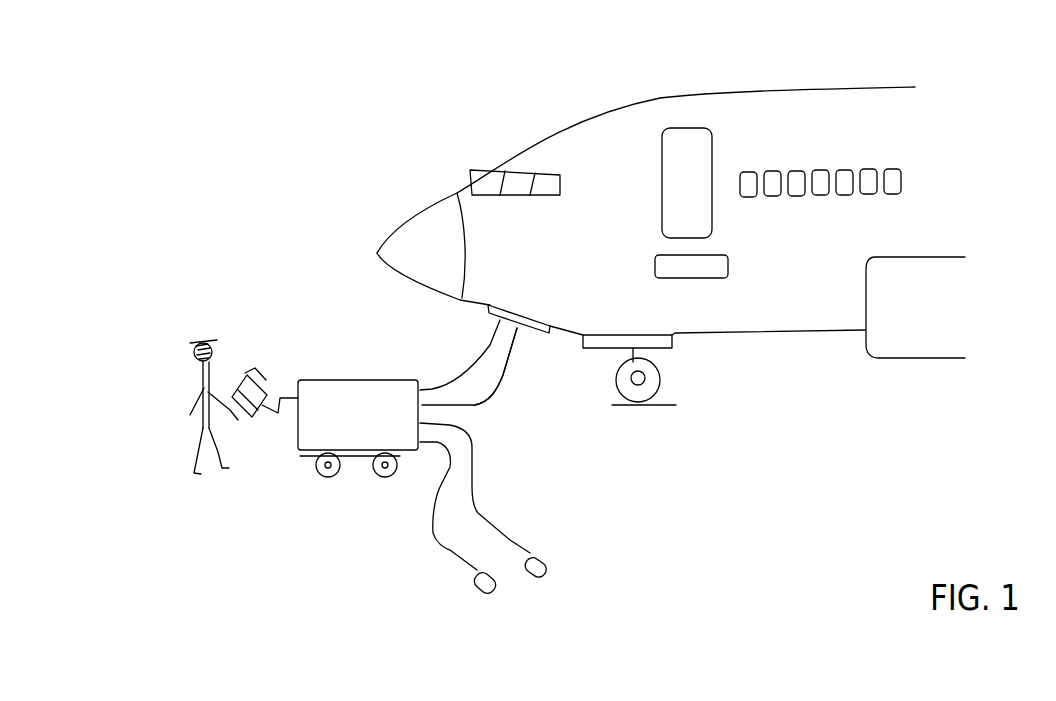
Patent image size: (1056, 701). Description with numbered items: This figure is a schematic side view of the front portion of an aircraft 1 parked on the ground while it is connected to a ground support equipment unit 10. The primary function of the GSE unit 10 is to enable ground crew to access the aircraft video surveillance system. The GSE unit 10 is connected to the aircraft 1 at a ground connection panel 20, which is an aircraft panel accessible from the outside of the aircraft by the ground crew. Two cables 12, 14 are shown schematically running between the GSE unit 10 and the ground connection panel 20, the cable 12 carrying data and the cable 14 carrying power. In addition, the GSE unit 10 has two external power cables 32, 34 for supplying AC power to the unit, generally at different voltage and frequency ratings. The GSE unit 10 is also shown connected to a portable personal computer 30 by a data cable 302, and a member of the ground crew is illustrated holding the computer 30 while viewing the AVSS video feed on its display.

The aircraft 1 is at (577, 112).
The ground support equipment (GSE) unit 10 is at (362, 377).
The cable 12 is at (462, 368).
The cable 14 is at (500, 403).
The ground connection panel (GCP) 20 is at (525, 305).
The portable personal computer 30 is at (255, 375).
The data cable 302 is at (273, 423).
The external power cable 32 is at (433, 548).
The external power cable 34 is at (497, 525).